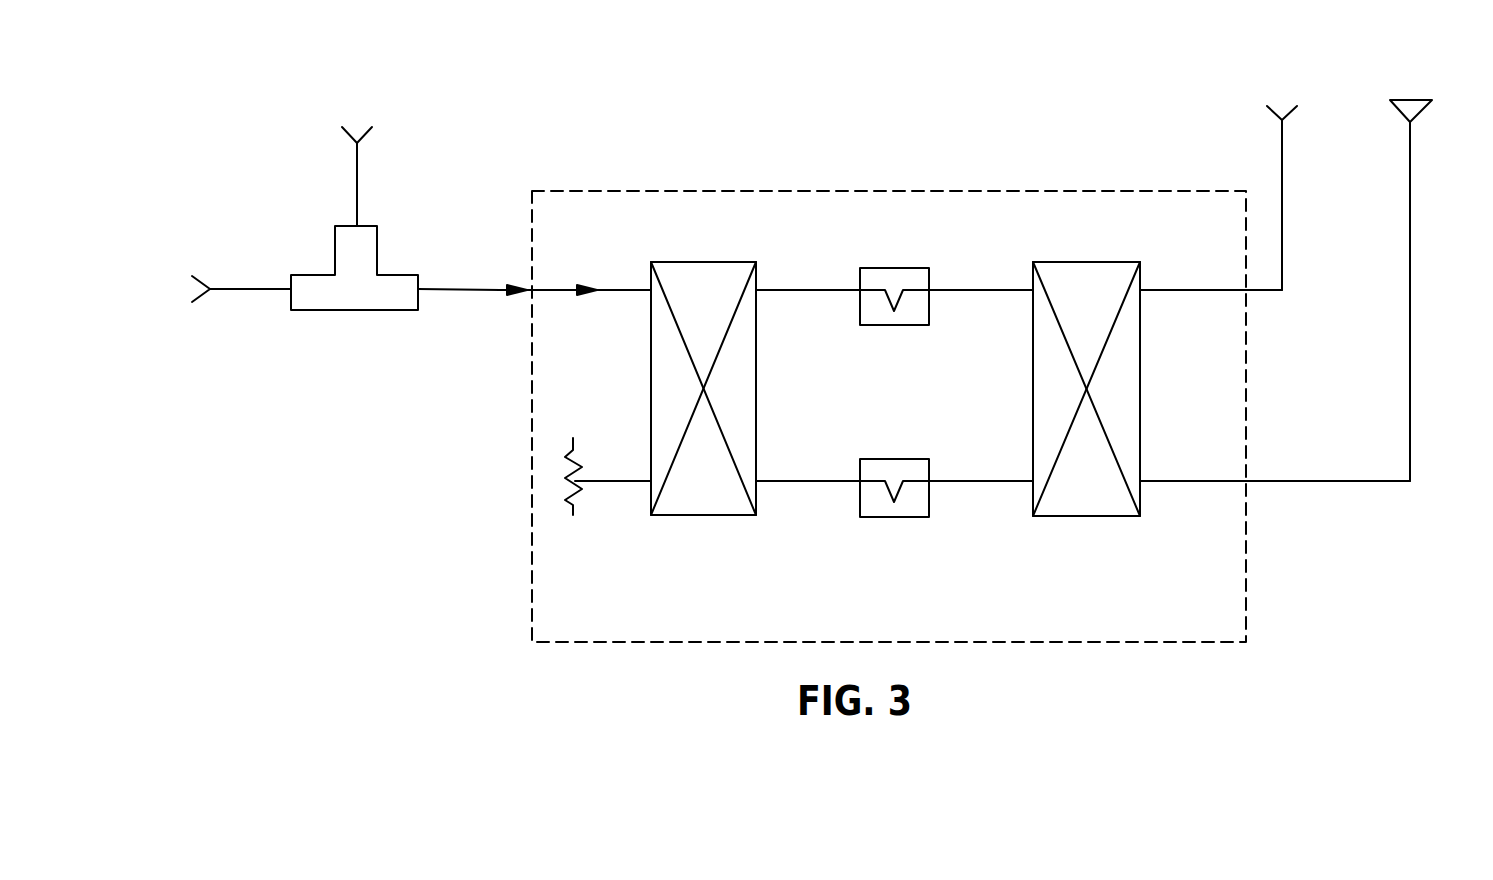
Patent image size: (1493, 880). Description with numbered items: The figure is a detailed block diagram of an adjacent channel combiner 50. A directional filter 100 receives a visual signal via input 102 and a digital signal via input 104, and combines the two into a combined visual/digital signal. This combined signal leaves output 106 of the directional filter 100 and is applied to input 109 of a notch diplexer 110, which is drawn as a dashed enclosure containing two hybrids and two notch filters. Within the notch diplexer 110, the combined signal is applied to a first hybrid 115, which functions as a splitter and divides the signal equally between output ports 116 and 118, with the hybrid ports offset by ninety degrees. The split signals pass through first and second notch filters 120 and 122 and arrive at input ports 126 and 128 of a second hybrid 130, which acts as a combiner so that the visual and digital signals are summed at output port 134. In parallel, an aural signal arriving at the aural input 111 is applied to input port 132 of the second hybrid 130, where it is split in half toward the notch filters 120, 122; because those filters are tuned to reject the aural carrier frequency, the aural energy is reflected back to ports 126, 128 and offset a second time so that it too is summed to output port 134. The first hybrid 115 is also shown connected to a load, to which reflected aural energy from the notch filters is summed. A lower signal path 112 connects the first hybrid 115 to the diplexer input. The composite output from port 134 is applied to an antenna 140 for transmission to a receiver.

The adjacent channel combiner 50 is at (802, 74).
The directional filter 100 is at (367, 226).
The input 102 is at (291, 287).
The input 104 is at (356, 226).
The output 106 is at (418, 290).
The input 109 is at (530, 291).
The notch diplexer 110 is at (843, 190).
The aural input 111 is at (1289, 111).
The input port of first hybrid 112 is at (651, 288).
The first hybrid 115 is at (703, 262).
The output port 116 is at (758, 289).
The output port 118 is at (758, 480).
The first notch filter 120 is at (893, 268).
The second notch filter 122 is at (893, 459).
The input port 126 is at (1033, 290).
The input port 128 is at (1033, 481).
The second hybrid 130 is at (1089, 262).
The input port 132 is at (1140, 290).
The output port 134 is at (1140, 481).
The antenna 140 is at (1418, 111).